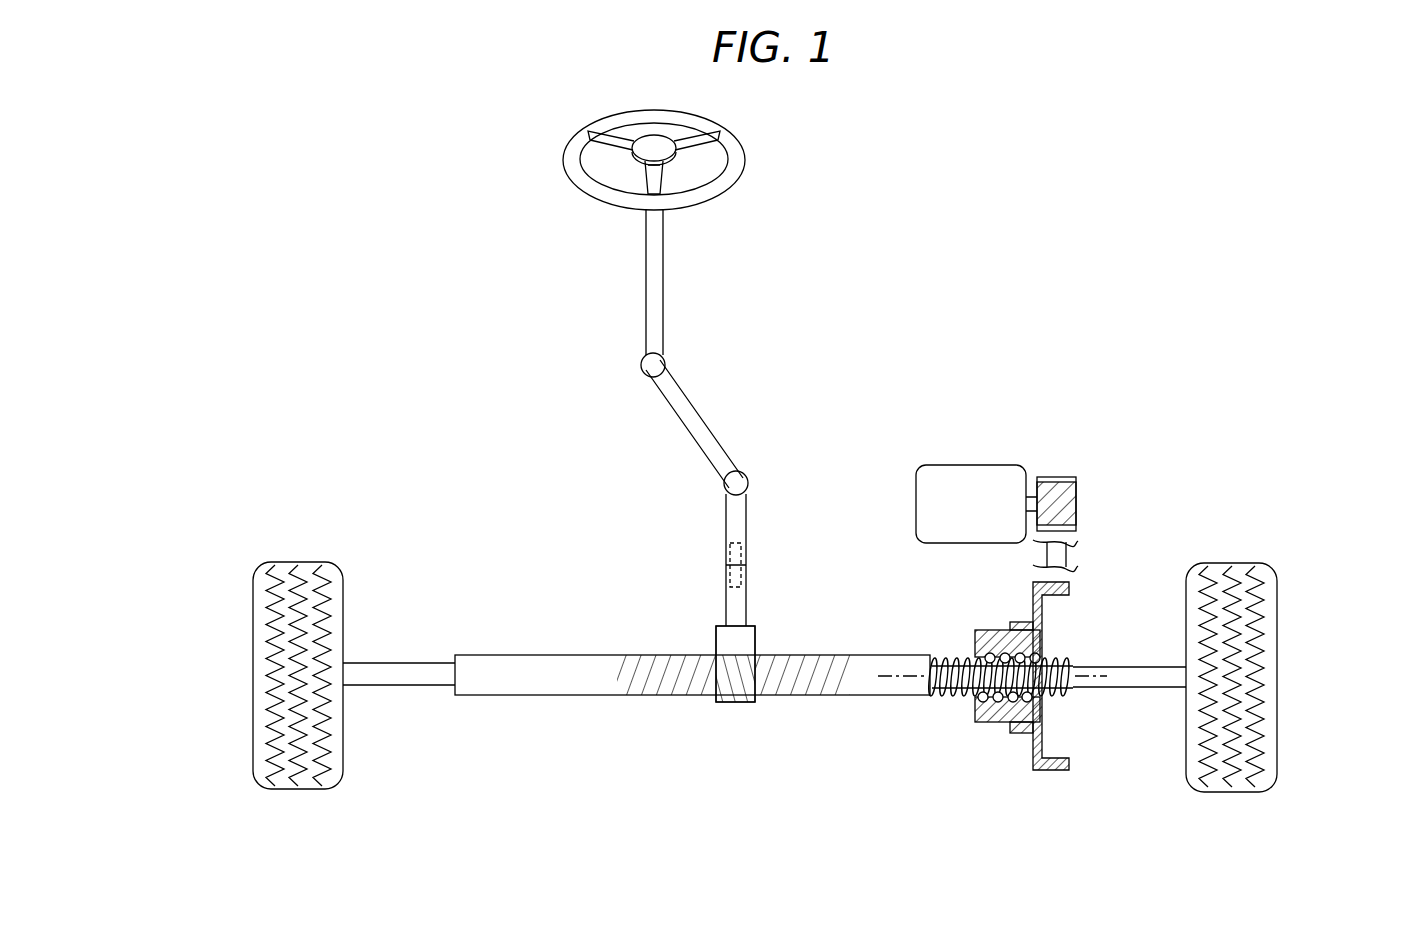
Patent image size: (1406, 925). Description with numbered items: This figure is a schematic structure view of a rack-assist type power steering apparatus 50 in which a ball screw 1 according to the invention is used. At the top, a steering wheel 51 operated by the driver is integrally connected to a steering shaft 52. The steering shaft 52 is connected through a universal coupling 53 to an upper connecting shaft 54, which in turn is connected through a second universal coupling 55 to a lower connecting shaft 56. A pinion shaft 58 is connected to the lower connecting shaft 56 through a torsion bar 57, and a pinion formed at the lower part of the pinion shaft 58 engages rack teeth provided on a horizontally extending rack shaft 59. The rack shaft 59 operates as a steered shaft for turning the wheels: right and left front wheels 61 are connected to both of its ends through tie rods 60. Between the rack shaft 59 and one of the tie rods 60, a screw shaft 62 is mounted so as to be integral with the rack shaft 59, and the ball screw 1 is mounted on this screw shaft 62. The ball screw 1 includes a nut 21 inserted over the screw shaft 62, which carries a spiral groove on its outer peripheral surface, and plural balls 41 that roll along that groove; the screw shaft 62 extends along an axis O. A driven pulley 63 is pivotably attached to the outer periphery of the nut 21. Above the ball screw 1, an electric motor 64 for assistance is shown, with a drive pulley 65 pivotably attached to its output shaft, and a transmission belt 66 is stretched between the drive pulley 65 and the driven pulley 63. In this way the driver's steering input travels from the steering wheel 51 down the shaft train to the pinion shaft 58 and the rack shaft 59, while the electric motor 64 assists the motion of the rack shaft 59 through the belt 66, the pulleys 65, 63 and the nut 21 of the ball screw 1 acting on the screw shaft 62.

The ball screw 1 is at (1000, 740).
The nut 21 is at (995, 645).
The balls 41 is at (992, 722).
The power steering apparatus 50 is at (818, 263).
The steering wheel 51 is at (745, 158).
The steering shaft 52 is at (665, 265).
The universal coupling 53 is at (664, 362).
The upper connecting shaft 54 is at (697, 413).
The universal coupling 55 is at (748, 483).
The lower connecting shaft 56 is at (748, 523).
The torsion bar 57 is at (727, 556).
The pinion shaft 58 is at (725, 610).
The rack shaft 59 is at (562, 700).
The tie rods 60 is at (410, 660).
The front wheels 61 is at (252, 610).
The screw shaft 62 is at (930, 690).
The driven pulley 63 is at (1058, 773).
The electric motor 64 is at (950, 465).
The drive pulley 65 is at (1053, 478).
The transmission belt 66 is at (1078, 560).
The axis O is at (905, 655).